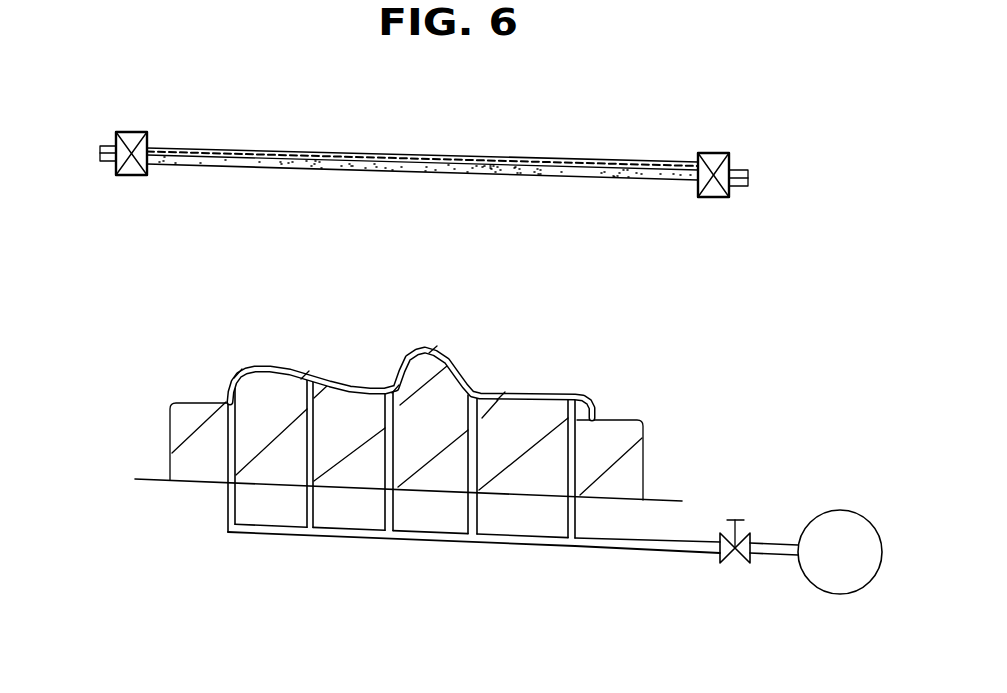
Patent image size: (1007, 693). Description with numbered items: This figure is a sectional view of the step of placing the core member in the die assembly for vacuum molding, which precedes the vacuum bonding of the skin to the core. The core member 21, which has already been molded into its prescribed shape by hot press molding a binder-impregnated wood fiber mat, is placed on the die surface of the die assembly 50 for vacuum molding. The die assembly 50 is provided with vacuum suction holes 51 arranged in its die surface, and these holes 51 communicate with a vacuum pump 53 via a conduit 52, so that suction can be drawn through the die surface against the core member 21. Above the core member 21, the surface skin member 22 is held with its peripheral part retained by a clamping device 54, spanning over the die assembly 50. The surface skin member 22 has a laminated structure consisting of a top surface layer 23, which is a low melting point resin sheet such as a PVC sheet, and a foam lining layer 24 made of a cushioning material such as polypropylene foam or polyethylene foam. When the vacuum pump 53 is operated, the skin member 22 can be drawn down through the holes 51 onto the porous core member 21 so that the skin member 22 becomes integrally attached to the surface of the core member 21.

The core member 21 is at (508, 392).
The surface skin member 22 is at (422, 149).
The top surface layer 23 is at (295, 148).
The foam lining layer 24 is at (332, 165).
The die assembly for vacuum molding 50 is at (198, 437).
The vacuum suction holes 51 is at (240, 387).
The conduit 52 is at (650, 550).
The vacuum pump 53 is at (823, 520).
The clamping device 54 is at (127, 175).